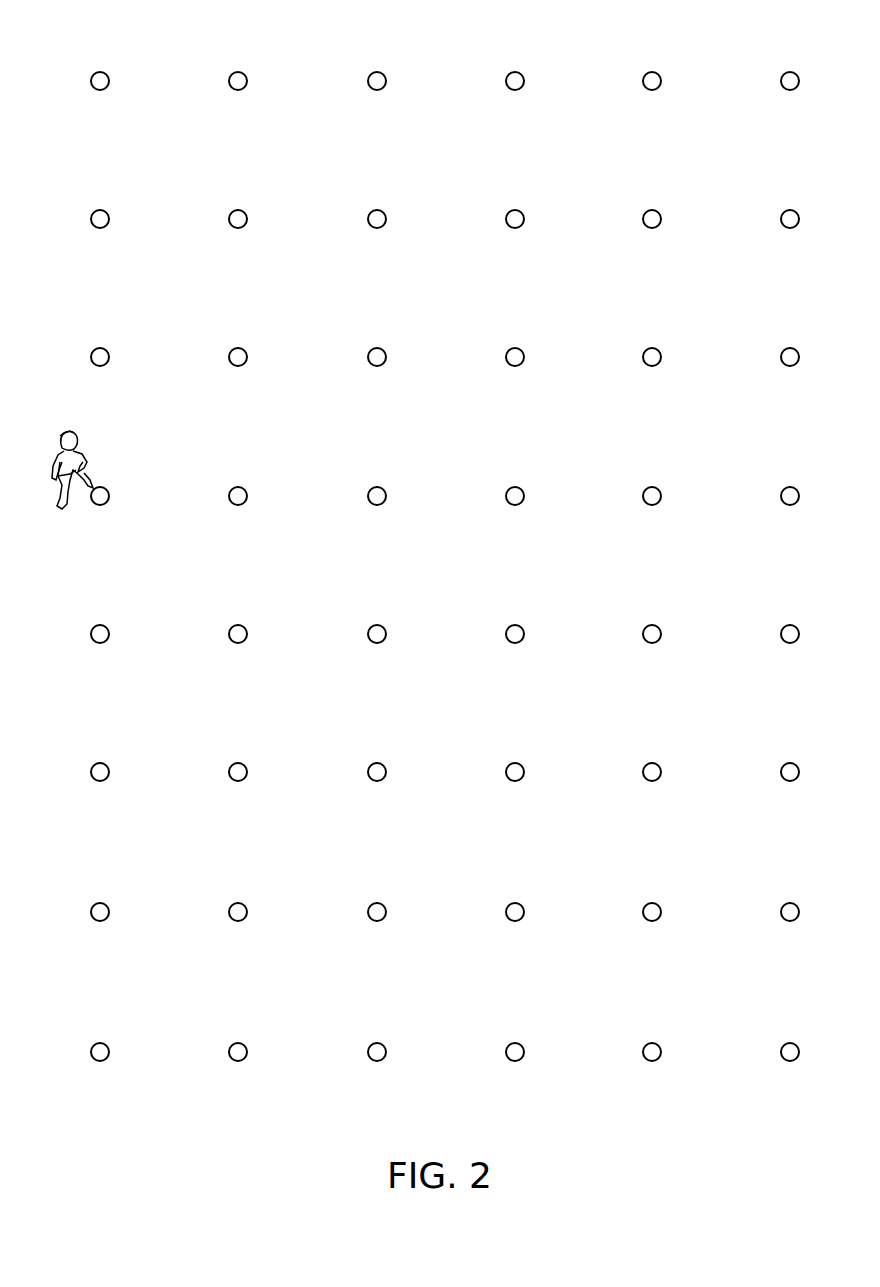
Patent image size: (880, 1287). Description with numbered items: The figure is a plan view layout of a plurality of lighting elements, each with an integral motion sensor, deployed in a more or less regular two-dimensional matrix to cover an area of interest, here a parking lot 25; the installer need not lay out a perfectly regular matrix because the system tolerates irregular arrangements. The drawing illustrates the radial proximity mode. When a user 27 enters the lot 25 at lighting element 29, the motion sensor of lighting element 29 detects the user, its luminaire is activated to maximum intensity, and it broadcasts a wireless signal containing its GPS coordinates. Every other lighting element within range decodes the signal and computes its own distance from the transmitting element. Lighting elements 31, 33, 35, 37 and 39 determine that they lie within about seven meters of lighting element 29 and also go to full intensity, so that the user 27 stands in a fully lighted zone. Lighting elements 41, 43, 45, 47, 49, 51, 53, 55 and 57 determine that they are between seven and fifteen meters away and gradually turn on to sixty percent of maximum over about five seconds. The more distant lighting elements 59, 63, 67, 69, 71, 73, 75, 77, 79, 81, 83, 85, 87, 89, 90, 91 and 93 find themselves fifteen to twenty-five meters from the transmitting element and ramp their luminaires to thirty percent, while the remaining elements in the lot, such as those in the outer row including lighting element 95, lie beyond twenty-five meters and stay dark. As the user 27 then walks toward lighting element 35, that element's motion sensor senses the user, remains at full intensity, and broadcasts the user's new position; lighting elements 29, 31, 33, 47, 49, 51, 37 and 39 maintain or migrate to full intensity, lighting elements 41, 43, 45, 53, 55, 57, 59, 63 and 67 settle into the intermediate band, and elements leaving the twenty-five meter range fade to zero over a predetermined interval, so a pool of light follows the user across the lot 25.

The parking lot 25 is at (313, 1093).
The user 27 is at (86, 453).
The lighting element 29 is at (108, 491).
The lighting element 31 is at (108, 352).
The lighting element 33 is at (246, 352).
The lighting element 35 is at (246, 491).
The lighting element 37 is at (246, 629).
The lighting element 39 is at (108, 629).
The lighting element 41 is at (108, 214).
The lighting element 43 is at (246, 214).
The lighting element 45 is at (385, 214).
The lighting element 47 is at (385, 352).
The lighting element 49 is at (385, 491).
The lighting element 51 is at (385, 629).
The lighting element 53 is at (385, 767).
The lighting element 55 is at (523, 214).
The lighting element 57 is at (523, 352).
The lighting element 59 is at (523, 491).
The lighting element 63 is at (523, 629).
The lighting element 67 is at (523, 767).
The lighting element 69 is at (108, 76).
The lighting element 71 is at (246, 76).
The lighting element 73 is at (385, 76).
The lighting element 75 is at (523, 76).
The lighting element 77 is at (660, 76).
The lighting element 79 is at (660, 214).
The lighting element 81 is at (660, 352).
The lighting element 83 is at (660, 491).
The lighting element 85 is at (660, 629).
The lighting element 87 is at (660, 767).
The lighting element 89 is at (660, 907).
The lighting element 90 is at (523, 907).
The lighting element 91 is at (385, 907).
The lighting element 93 is at (246, 907).
The sensor node 95 is at (108, 907).